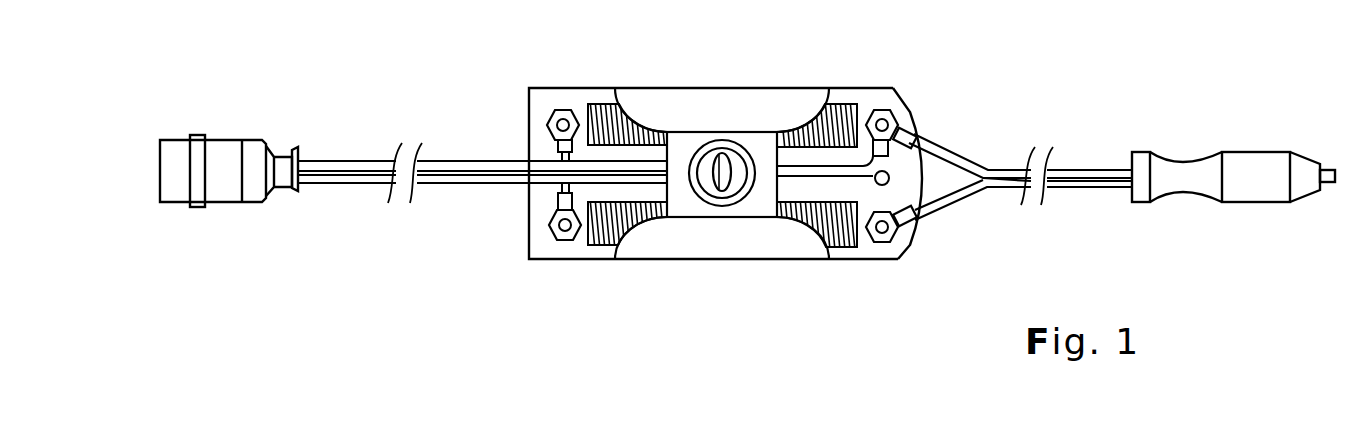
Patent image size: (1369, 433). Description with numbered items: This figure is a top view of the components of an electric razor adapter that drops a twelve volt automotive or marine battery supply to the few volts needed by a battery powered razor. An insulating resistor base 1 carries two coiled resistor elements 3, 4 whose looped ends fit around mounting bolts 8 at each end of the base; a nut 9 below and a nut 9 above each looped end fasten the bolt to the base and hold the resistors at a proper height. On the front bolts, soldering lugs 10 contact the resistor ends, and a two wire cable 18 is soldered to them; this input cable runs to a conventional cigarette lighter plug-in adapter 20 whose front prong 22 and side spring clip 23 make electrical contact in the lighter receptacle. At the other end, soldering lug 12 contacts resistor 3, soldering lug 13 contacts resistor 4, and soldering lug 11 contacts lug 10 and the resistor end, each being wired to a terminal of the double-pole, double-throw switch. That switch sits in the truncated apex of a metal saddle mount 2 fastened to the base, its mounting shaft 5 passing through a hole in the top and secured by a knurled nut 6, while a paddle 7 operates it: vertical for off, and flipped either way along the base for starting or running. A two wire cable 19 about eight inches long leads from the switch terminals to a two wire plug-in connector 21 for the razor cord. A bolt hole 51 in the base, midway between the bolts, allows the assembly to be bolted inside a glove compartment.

The resistor base 1 is at (837, 261).
The saddle mount 2 is at (612, 252).
The resistor element 3 is at (858, 261).
The resistor element 4 is at (834, 88).
The mounting shaft 5 is at (702, 196).
The knurled nut 6 is at (708, 198).
The paddle 7 is at (732, 180).
The mounting bolts 8 is at (552, 108).
The nut 9 is at (549, 120).
The soldering lugs 10 is at (920, 134).
The soldering lug 11 is at (921, 173).
The soldering lug 12 is at (558, 199).
The soldering lug 13 is at (559, 147).
The two wire cable 18 is at (1110, 166).
The two wire cable 19 is at (451, 161).
The cigarette lighter plug-in adapter 20 is at (1250, 152).
The two wire plug-in connector 21 is at (218, 140).
The front prong 22 is at (1330, 184).
The side spring clip 23 is at (1247, 204).
The bolt hole 51 is at (873, 178).